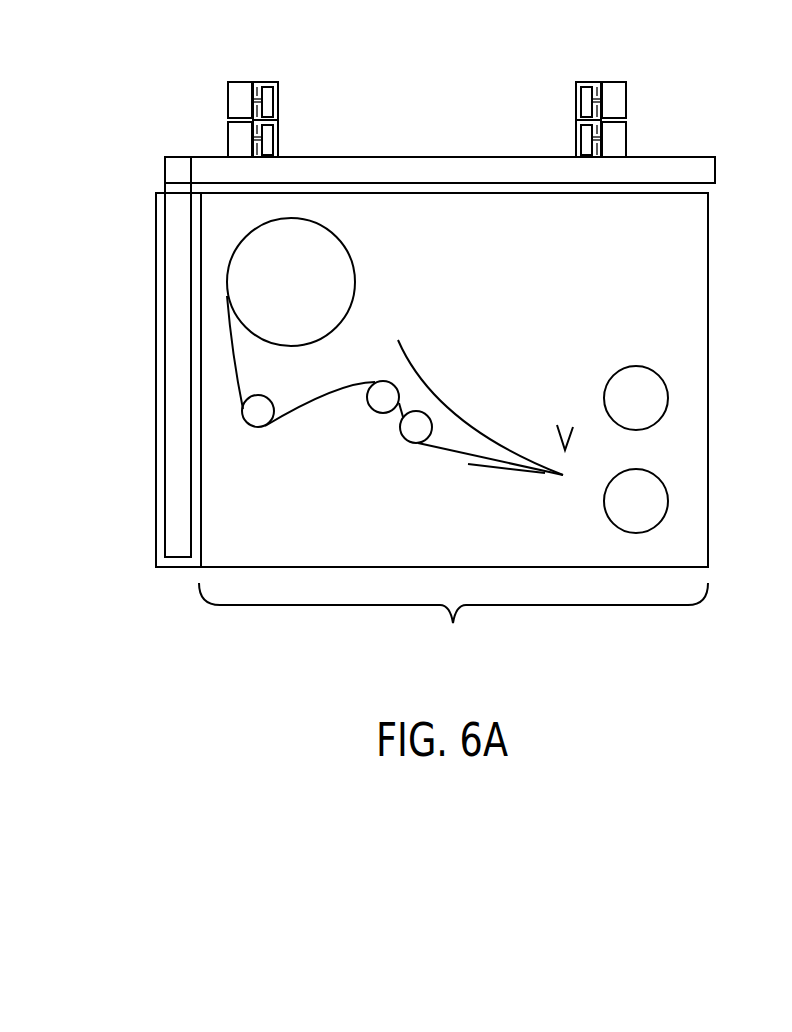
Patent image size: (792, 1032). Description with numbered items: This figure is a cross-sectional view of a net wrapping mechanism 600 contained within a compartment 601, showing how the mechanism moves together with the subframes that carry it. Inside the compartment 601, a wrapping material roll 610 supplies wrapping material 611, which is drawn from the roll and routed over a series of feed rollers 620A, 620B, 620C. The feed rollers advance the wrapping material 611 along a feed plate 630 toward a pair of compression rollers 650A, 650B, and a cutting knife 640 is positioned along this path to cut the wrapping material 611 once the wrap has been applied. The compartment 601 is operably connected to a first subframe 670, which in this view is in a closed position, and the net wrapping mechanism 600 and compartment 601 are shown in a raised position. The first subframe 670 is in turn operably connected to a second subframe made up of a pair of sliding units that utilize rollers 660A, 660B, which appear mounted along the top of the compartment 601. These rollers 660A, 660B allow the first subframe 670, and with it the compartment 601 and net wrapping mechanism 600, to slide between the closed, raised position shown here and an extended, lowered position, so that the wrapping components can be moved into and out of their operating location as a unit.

The net wrapping mechanism 600 is at (453, 622).
The compartment 601 is at (592, 568).
The wrapping material roll 610 is at (352, 262).
The wrapping material 611 is at (229, 362).
The feed roller 620A is at (255, 428).
The feed roller 620B is at (378, 414).
The feed roller 620C is at (410, 444).
The feed plate 630 is at (487, 467).
The cutting knife 640 is at (566, 441).
The compression roller 650A is at (607, 521).
The compression roller 650B is at (615, 368).
The roller 660A is at (267, 82).
The roller 660B is at (592, 82).
The first subframe 670 is at (172, 400).